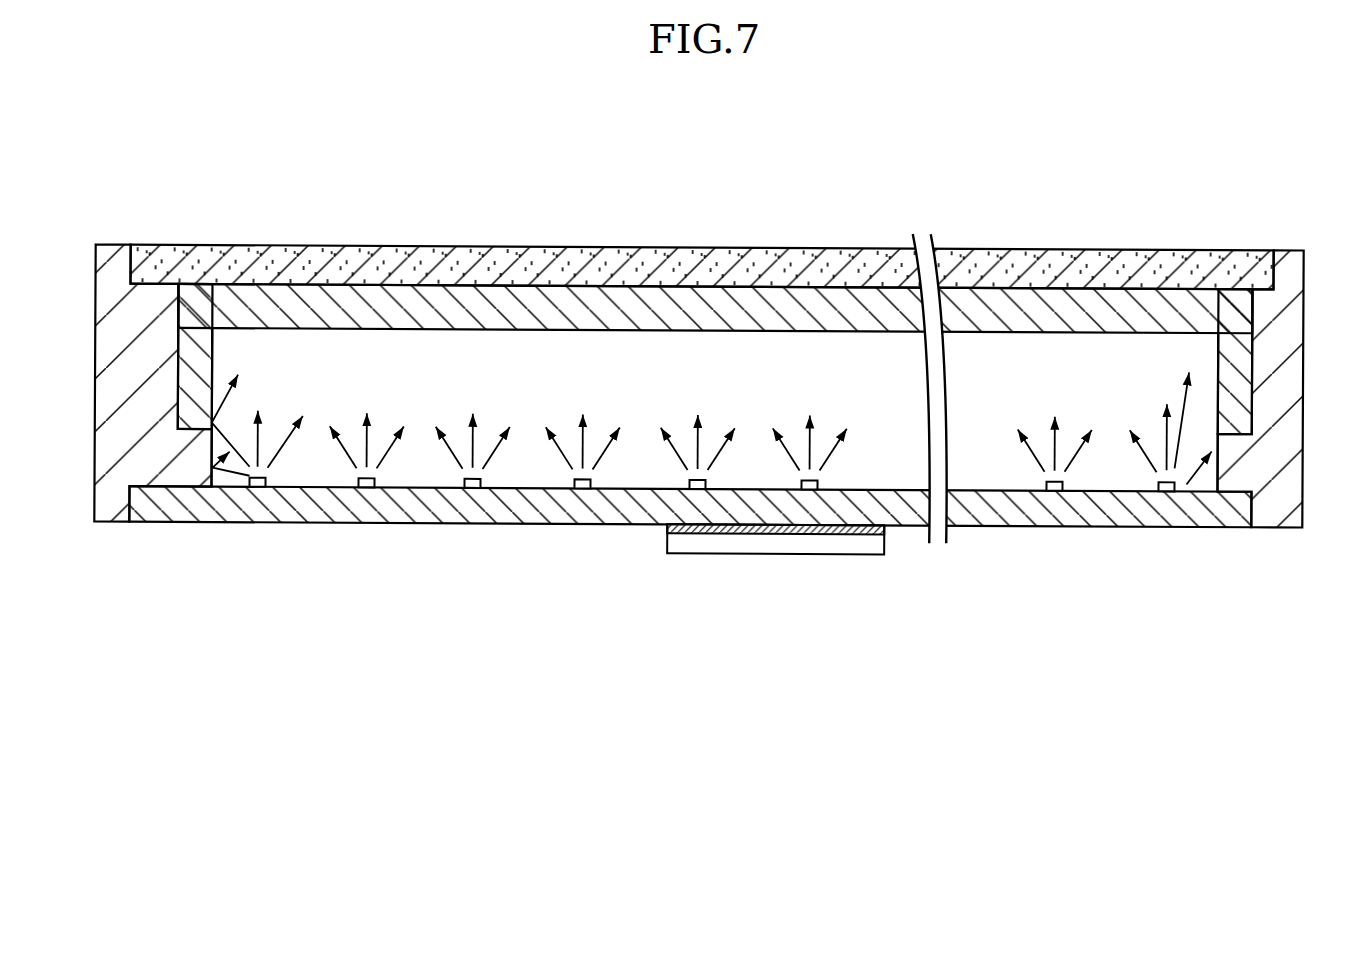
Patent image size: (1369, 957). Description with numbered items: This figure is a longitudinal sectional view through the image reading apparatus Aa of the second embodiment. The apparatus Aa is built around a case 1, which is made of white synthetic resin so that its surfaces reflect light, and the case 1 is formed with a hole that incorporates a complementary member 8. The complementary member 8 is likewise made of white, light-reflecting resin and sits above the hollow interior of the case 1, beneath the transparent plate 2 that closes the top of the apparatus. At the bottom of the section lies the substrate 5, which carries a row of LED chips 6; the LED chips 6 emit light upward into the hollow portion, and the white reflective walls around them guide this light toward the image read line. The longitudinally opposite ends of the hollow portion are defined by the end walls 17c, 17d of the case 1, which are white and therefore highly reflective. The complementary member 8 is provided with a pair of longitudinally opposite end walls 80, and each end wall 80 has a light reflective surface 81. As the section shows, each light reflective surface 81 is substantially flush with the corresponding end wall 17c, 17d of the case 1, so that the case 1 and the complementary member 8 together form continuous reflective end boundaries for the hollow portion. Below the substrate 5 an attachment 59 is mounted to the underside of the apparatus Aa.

The image reading apparatus Aa is at (1134, 167).
The case 1 is at (1291, 294).
The transparent plate 2 is at (972, 272).
The substrate 5 is at (600, 507).
The LED chips 6 is at (258, 490).
The complementary member 8 is at (570, 307).
The end wall 17c is at (212, 477).
The end wall 17d is at (1215, 480).
The attachment 59 is at (843, 542).
The end wall 80 is at (187, 367).
The light reflective surface 81 is at (217, 374).